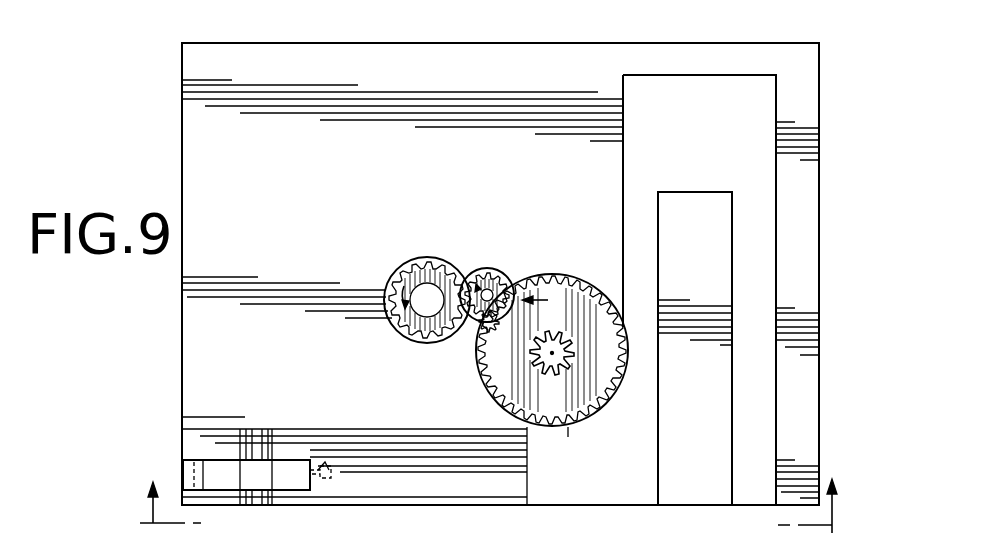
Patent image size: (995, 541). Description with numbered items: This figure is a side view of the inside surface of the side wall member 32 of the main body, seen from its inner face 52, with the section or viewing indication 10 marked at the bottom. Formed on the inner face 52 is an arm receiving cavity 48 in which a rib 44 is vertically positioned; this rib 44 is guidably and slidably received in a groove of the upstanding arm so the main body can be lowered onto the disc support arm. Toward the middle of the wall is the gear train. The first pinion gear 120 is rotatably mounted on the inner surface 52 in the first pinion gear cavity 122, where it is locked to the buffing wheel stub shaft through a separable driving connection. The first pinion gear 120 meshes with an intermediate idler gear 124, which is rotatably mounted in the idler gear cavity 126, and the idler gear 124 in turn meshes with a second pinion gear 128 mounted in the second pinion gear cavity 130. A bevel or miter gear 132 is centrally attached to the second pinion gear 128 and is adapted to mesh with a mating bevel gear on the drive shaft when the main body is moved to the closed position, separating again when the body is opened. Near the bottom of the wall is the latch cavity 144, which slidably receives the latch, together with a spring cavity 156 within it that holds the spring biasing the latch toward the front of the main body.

The section line / viewing direction 10 is at (495, 510).
The side wall member 32 is at (182, 83).
The rib 44 is at (725, 312).
The arm receiving cavity 48 is at (768, 183).
The inner face 52 is at (790, 455).
The first pinion gear 120 is at (426, 266).
The first pinion gear cavity 122 is at (392, 330).
The intermediate idler gear 124 is at (500, 272).
The idler gear cavity 126 is at (478, 323).
The second pinion gear 128 is at (562, 281).
The second pinion gear cavity 130 is at (483, 374).
The bevel or miter gear 132 is at (567, 428).
The latch cavity 144 is at (222, 462).
The spring cavity 156 is at (325, 462).